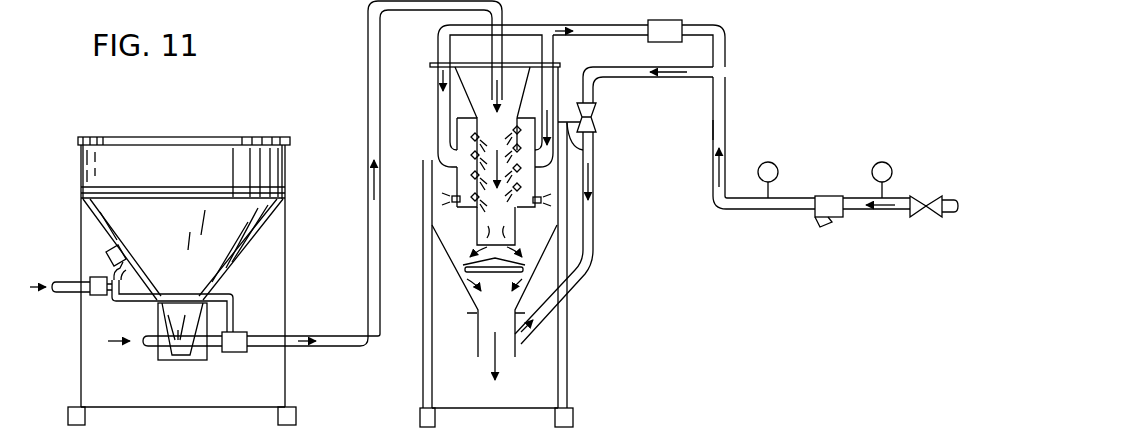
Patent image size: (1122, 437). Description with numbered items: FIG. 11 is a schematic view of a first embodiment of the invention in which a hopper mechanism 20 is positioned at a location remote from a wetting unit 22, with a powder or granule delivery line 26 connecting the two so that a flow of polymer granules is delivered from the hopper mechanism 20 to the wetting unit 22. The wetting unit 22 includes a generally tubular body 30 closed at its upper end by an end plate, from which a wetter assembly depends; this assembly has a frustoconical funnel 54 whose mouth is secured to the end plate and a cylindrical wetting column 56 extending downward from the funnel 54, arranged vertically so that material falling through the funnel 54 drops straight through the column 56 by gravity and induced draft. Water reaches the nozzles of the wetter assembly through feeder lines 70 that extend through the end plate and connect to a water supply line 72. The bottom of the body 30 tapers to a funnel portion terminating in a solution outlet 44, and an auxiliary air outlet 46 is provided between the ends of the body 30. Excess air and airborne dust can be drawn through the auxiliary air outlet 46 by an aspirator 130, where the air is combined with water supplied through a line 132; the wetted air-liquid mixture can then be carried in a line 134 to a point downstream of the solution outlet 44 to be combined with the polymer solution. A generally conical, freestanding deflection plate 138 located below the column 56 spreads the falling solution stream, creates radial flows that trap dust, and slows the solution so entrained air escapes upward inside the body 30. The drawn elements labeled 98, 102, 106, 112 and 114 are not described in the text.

The hopper mechanism 20 is at (215, 128).
The wetting unit 22 is at (580, 302).
The powder or granule delivery line 26 is at (368, 38).
The tubular body 30 is at (436, 137).
The solution outlet 44 is at (482, 312).
The auxiliary air outlet 46 is at (596, 147).
The frustoconical funnel 54 is at (520, 100).
The wetting column 56 is at (468, 222).
The feeder lines 70 is at (440, 30).
The water supply line 72 is at (725, 122).
The powder inlet funnel 98 is at (487, 90).
The powder hopper 102 is at (203, 247).
The powder feeder 106 is at (183, 358).
The eductor 112 is at (240, 352).
The air supply line 114 is at (235, 313).
The aspirator 130 is at (597, 122).
The water line 132 is at (694, 78).
The air-liquid mixture line 134 is at (600, 245).
The deflection plate 138 is at (465, 268).